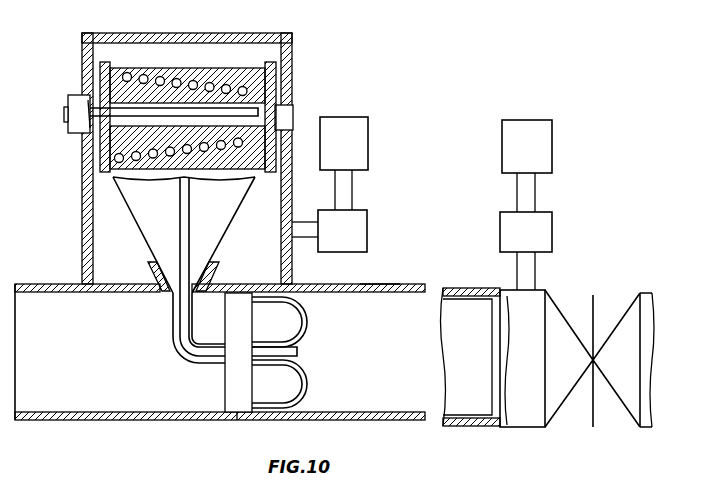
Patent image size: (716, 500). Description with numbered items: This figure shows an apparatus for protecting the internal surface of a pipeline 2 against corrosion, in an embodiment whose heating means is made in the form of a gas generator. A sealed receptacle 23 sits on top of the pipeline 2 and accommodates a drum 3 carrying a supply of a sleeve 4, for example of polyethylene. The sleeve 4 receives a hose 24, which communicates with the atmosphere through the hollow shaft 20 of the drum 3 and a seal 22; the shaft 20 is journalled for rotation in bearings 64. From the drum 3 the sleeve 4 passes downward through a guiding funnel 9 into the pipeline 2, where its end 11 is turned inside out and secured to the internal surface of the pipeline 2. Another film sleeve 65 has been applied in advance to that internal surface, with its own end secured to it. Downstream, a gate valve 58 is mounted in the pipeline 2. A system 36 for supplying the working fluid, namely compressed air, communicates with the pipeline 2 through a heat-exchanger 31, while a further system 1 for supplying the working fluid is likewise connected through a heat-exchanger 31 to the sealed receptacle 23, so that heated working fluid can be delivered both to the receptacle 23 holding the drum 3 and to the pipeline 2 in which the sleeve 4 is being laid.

The system for supplying the working fluid 1 is at (344, 143).
The pipeline 2 is at (138, 421).
The drum 3 is at (108, 62).
The sleeve 4 is at (306, 397).
The guiding funnel 9 is at (150, 284).
The end of the sleeve 11 is at (237, 421).
The hollow shaft 20 is at (152, 104).
The seal 22 is at (88, 100).
The sealed receptacle 23 is at (106, 40).
The hose 24 is at (209, 83).
The heat-exchanger 31 is at (422, 230).
The system for supplying the working fluid 36 is at (527, 146).
The gate valve 58 is at (558, 397).
The bearings 64 is at (68, 98).
The film sleeve 65 is at (379, 287).